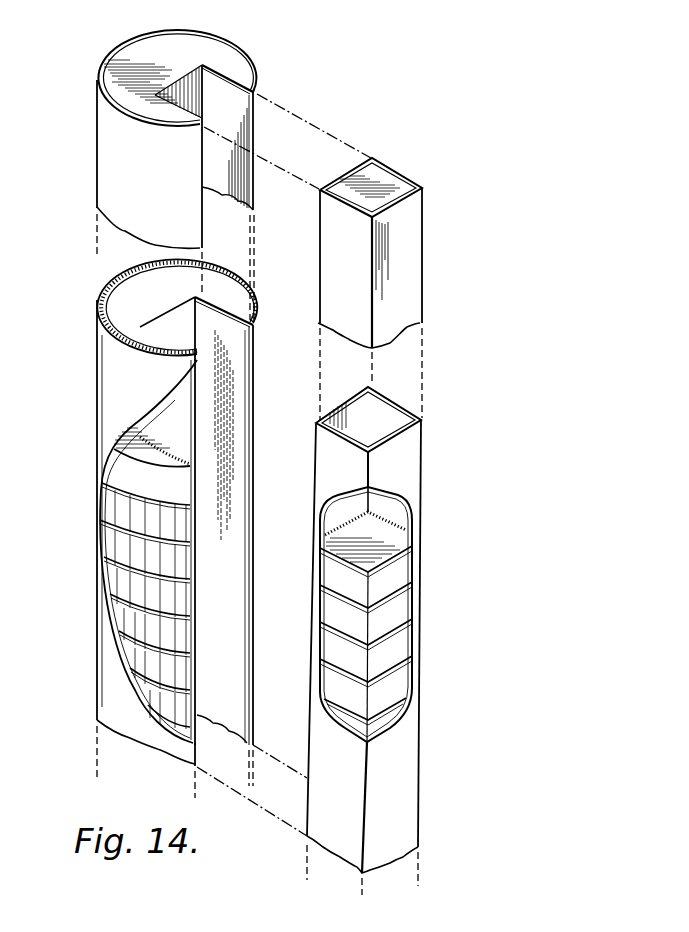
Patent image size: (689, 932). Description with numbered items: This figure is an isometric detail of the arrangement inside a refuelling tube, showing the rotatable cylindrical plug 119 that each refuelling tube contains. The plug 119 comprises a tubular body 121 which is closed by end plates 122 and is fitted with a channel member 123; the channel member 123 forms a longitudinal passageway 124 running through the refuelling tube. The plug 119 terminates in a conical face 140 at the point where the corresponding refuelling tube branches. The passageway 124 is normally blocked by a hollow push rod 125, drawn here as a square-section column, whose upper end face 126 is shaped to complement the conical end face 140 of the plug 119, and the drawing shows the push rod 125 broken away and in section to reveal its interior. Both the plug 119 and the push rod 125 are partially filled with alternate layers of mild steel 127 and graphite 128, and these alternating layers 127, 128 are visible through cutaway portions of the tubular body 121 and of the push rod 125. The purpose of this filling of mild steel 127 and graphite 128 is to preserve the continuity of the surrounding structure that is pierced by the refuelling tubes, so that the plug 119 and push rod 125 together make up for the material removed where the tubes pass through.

The rotatable cylindrical plug 119 is at (113, 358).
The tubular body 121 is at (110, 284).
The end plates 122 is at (220, 57).
The channel member 123 is at (228, 103).
The longitudinal passageway 124 is at (227, 220).
The hollow push rod 125 is at (412, 282).
The upper end face 126 is at (398, 185).
The mild steel layer 127 is at (102, 463).
The graphite layer 128 is at (133, 487).
The conical face 140 is at (247, 75).